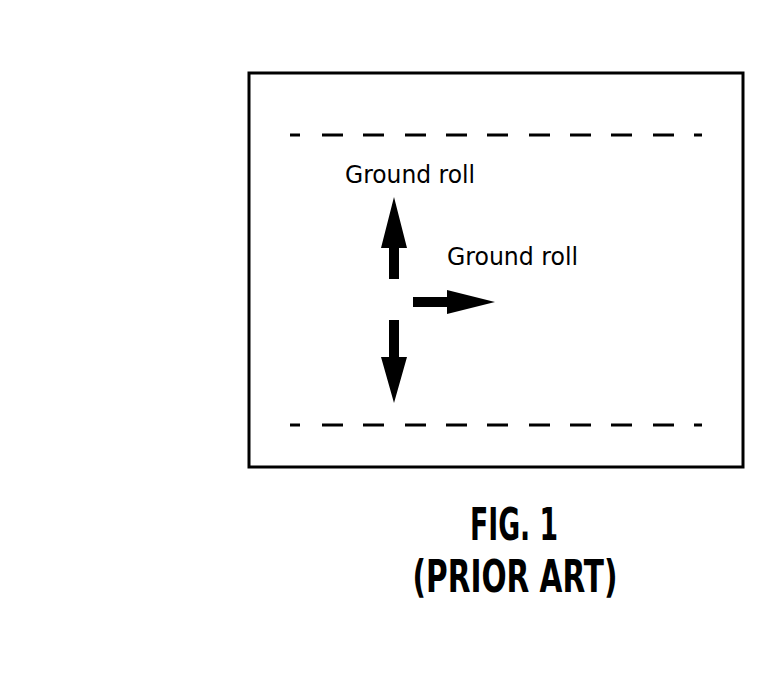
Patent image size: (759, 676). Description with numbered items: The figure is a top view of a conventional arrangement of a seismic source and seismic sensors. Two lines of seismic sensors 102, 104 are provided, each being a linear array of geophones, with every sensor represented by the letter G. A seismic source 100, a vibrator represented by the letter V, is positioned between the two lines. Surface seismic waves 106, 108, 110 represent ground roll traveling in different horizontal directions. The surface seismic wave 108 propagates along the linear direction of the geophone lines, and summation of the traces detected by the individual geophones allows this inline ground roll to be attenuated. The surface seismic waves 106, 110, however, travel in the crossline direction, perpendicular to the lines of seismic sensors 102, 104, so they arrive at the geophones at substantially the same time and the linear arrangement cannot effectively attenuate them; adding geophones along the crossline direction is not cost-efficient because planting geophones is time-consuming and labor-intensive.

The seismic source 100 is at (270, 279).
The line of seismic sensors 102 is at (423, 122).
The line of seismic sensors 104 is at (417, 413).
The surface seismic wave 106 is at (276, 223).
The surface seismic wave 108 is at (490, 318).
The surface seismic wave 110 is at (276, 360).